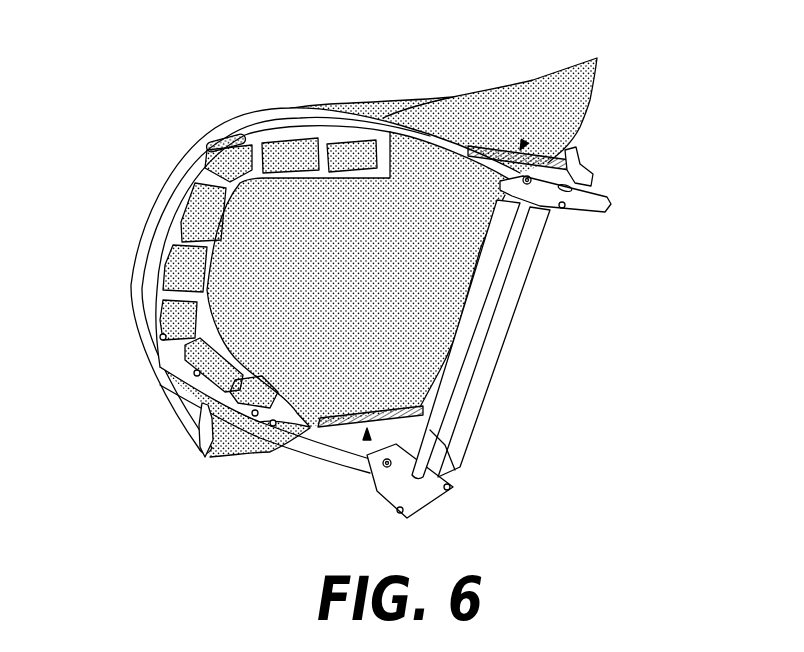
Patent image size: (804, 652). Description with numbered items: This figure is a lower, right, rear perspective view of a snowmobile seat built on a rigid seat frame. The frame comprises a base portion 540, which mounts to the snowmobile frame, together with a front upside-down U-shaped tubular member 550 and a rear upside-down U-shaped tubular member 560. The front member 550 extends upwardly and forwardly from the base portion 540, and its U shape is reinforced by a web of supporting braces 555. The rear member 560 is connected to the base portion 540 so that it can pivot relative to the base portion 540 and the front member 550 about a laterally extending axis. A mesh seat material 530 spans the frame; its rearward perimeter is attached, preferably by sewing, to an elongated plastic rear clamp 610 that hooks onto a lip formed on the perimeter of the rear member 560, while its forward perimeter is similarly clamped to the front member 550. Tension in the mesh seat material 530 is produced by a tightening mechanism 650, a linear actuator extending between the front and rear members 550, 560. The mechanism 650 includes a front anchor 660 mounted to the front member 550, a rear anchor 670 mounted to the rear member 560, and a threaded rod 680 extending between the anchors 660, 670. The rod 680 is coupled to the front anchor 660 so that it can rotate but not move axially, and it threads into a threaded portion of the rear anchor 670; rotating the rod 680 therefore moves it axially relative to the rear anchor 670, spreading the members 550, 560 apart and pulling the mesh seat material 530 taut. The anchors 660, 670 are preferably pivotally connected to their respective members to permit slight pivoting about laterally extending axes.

The mesh seat material 530 is at (485, 120).
The base portion 540 is at (603, 213).
The front upside-down U-shaped tubular member 550 is at (497, 320).
The web of supporting braces 555 is at (507, 237).
The rear upside-down U-shaped tubular member 560 is at (207, 432).
The rear clamp 610 is at (163, 383).
The tightening mechanism 650 is at (523, 146).
The front anchor 660 is at (582, 158).
The rear anchor 670 is at (443, 140).
The threaded rod 680 is at (546, 150).